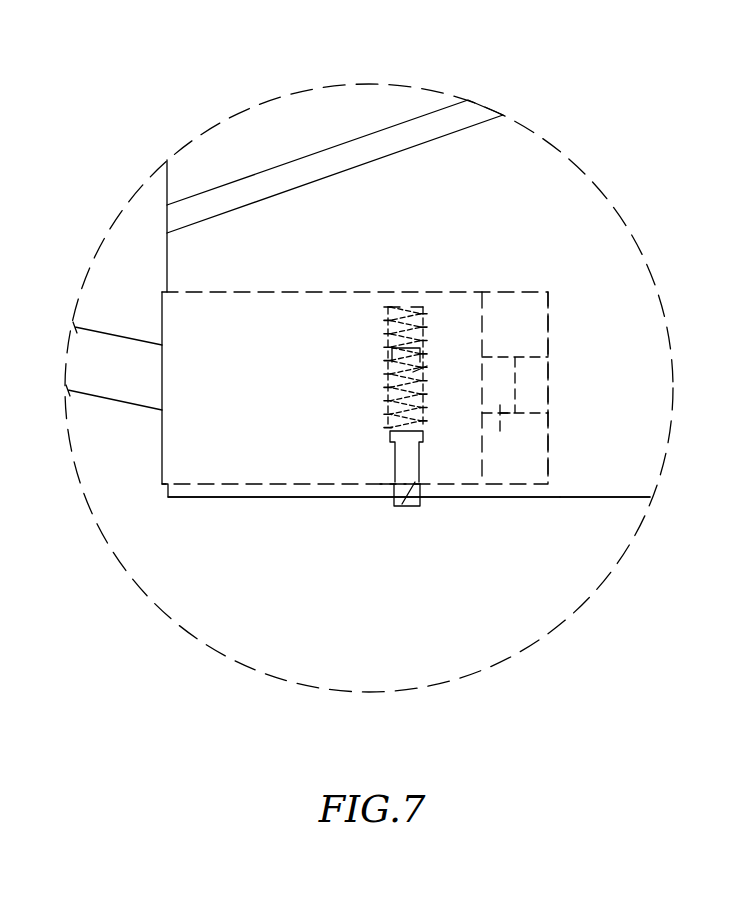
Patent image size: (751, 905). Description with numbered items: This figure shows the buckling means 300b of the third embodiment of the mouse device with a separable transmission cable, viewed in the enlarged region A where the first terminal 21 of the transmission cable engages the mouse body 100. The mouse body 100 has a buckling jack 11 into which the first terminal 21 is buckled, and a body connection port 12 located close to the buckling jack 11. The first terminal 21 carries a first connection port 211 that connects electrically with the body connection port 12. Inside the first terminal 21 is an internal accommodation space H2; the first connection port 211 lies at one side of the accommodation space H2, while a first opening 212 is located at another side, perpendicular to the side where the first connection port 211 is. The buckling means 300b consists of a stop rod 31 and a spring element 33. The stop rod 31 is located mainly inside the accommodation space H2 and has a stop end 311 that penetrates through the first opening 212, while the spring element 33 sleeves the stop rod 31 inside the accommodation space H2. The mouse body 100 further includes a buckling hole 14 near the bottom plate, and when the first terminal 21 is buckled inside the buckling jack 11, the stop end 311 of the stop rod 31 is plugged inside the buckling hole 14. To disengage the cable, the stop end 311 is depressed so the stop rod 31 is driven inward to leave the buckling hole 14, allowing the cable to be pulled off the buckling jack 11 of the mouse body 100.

The mouse body 100 is at (337, 106).
The enlarged region A is at (90, 267).
The buckling jack 11 is at (533, 319).
The body connection port 12 is at (533, 390).
The buckling hole 14 is at (400, 496).
The first terminal 21 is at (192, 444).
The first connection port 211 is at (530, 487).
The first opening 212 is at (393, 447).
The stop rod 31 is at (408, 458).
The stop end 311 is at (398, 512).
The spring element 33 is at (427, 366).
The buckling means 300b is at (455, 756).
The accommodation space H2 is at (395, 306).